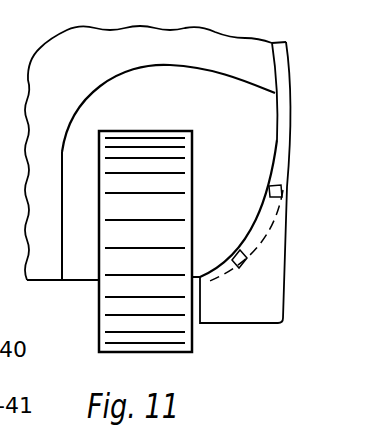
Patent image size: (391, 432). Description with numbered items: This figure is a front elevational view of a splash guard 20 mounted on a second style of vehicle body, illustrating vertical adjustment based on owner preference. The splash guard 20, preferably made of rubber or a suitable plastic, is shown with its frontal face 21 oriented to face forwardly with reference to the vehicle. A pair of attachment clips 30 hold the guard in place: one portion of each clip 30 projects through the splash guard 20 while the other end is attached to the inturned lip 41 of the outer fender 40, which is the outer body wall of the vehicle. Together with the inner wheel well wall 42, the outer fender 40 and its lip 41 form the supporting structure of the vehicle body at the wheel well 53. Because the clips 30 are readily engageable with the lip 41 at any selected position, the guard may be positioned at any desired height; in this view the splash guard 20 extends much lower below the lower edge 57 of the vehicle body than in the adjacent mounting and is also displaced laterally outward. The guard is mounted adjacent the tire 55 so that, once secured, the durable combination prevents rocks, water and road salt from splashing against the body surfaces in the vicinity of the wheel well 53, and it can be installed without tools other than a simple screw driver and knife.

The splash guard 20 is at (266, 231).
The frontal face 21 is at (253, 311).
The attachment clips 30 is at (242, 250).
The outer fender 40 is at (310, 114).
The inturned lip 41 is at (288, 127).
The inner wheel well wall 42 is at (243, 131).
The wheel well 53 is at (262, 163).
The tire 55 is at (192, 352).
The lower edge of vehicle body 57 is at (80, 282).